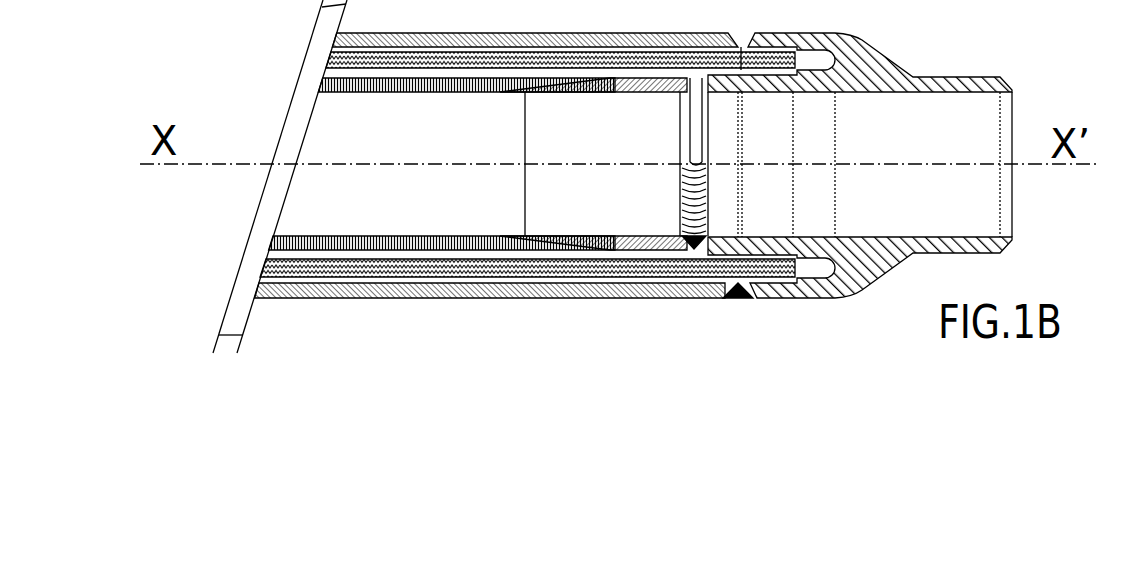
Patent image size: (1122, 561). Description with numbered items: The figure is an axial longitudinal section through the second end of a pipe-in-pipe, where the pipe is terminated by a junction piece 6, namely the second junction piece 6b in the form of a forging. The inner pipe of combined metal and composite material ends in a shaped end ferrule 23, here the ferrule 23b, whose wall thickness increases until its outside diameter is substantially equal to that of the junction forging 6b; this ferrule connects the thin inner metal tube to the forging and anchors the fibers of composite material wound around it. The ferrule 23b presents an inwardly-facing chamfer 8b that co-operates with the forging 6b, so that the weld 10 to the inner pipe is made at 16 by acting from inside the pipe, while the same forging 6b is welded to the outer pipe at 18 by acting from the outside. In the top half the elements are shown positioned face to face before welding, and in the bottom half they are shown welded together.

The junction piece 6 is at (738, 33).
The second junction piece 6b is at (882, 58).
The shaped end ferrule 23 is at (603, 93).
The end ferrule 23b is at (593, 164).
The inwardly-facing chamfer 8b is at (686, 95).
The outer weld 18 is at (745, 146).
The weld 10 is at (697, 224).
The inner weld 16 is at (694, 242).